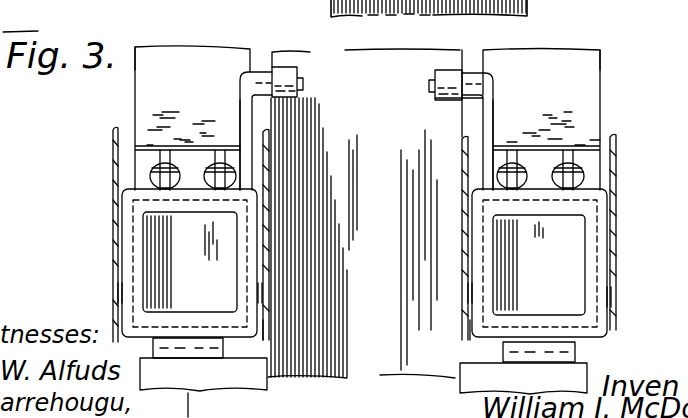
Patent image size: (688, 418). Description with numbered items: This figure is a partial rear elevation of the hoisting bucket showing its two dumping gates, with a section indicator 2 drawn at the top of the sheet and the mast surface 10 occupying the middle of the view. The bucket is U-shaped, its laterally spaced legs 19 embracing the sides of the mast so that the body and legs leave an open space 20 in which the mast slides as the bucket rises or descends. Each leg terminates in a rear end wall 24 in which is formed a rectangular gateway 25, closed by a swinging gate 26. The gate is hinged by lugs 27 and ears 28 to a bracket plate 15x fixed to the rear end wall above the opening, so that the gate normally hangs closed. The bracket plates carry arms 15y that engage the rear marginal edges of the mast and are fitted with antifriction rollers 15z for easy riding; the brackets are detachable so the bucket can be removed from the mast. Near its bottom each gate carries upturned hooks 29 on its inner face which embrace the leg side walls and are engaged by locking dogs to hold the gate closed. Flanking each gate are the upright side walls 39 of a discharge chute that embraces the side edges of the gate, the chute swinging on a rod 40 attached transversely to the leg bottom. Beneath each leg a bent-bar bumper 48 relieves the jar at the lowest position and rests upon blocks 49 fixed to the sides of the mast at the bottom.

The section/view indicator 2 is at (192, 38).
The wall or main body 10 is at (365, 213).
The bracket plate 15x is at (620, 113).
The arms 15y is at (243, 110).
The antifriction rollers 15z is at (297, 74).
The legs 19 is at (135, 72).
The open space 20 is at (268, 61).
The rear end walls 24 is at (367, 118).
The gateway 25 is at (240, 283).
The swinging gate 26 is at (364, 263).
The lugs 27 is at (215, 156).
The ears 28 is at (172, 192).
The upturned dogs or hooks 29 is at (113, 285).
The chute side walls 39 is at (113, 140).
The rod 40 is at (470, 327).
The bumper 48 is at (196, 355).
The blocks 49 is at (363, 376).